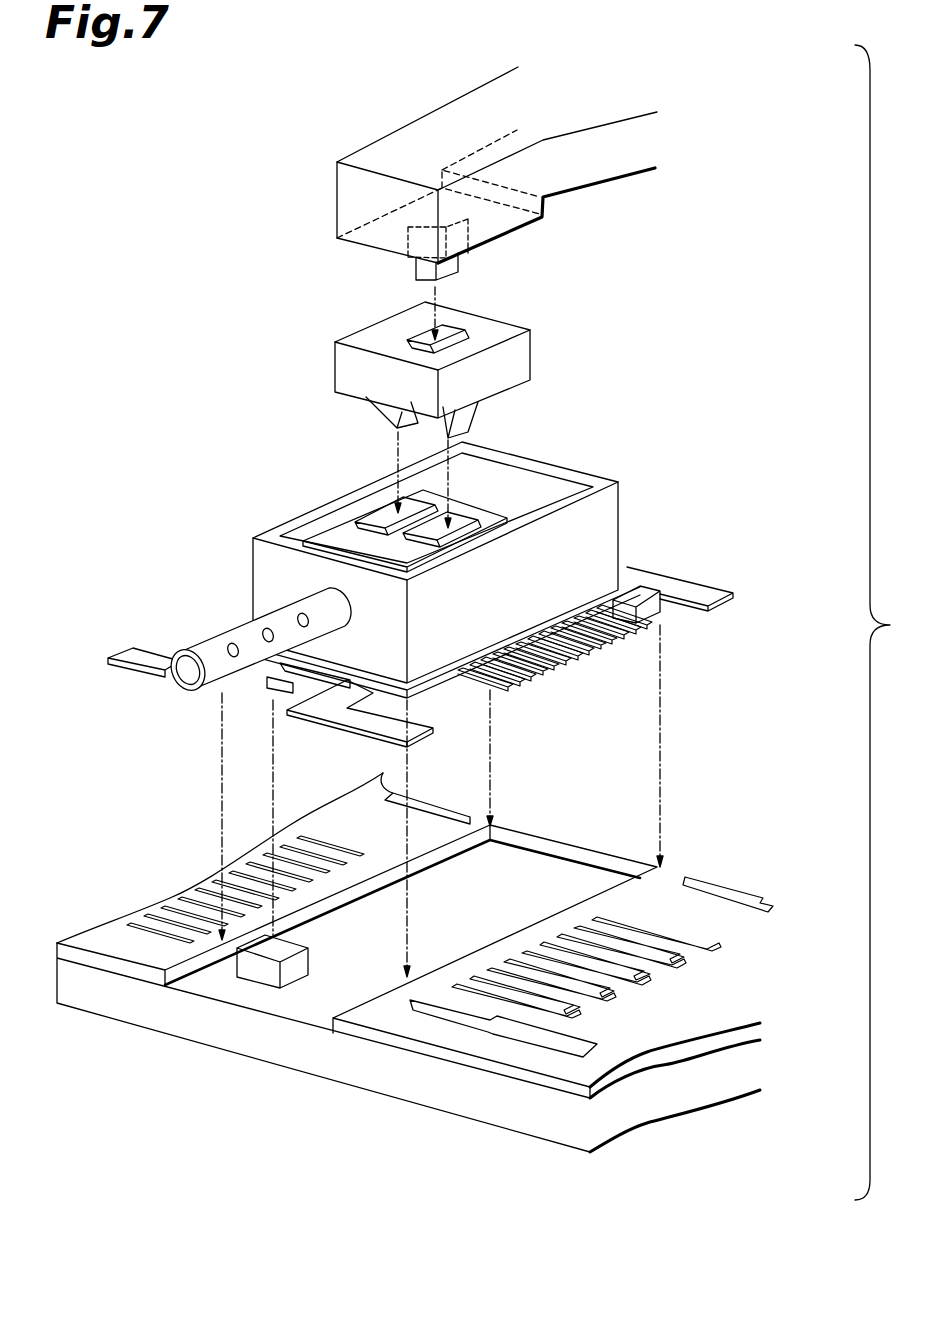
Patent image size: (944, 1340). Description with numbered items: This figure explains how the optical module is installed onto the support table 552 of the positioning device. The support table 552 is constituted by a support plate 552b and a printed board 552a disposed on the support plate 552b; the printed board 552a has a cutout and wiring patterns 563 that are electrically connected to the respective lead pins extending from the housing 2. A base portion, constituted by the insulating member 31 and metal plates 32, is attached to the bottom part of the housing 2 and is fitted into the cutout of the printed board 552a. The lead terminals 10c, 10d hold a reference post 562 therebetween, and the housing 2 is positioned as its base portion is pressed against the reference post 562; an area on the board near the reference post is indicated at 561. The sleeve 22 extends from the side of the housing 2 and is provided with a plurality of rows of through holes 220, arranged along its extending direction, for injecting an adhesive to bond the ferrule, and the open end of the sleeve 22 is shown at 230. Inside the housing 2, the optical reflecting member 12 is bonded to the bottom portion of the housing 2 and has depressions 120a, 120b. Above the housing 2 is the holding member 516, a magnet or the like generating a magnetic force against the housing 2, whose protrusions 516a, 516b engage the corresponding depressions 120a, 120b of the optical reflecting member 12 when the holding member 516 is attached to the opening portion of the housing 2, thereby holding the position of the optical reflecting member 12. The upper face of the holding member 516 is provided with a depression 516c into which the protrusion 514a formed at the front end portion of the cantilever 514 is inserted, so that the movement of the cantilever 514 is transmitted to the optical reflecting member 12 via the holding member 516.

The cantilever 514 is at (607, 170).
The protrusion 514a is at (410, 266).
The holding member 516 is at (465, 358).
The protrusion 516a is at (372, 410).
The protrusion 516b is at (478, 414).
The depression 516c is at (450, 332).
The housing 2 is at (456, 562).
The optical reflecting member 12 is at (323, 530).
The depression 120a is at (383, 515).
The depression 120b is at (458, 528).
The sleeve 22 is at (239, 646).
The through holes 220 is at (231, 647).
The bore of tube 230 is at (196, 680).
The lead terminal 10c is at (122, 656).
The lead terminal 10d is at (340, 724).
The insulating member 31 is at (665, 600).
The metal plates 32 is at (660, 618).
The support table 552 is at (433, 988).
The printed board 552a is at (636, 1049).
The support plate 552b is at (630, 1112).
The mounting pad 561 is at (313, 1004).
The reference post 562 is at (257, 977).
The wiring patterns 563 is at (563, 1044).